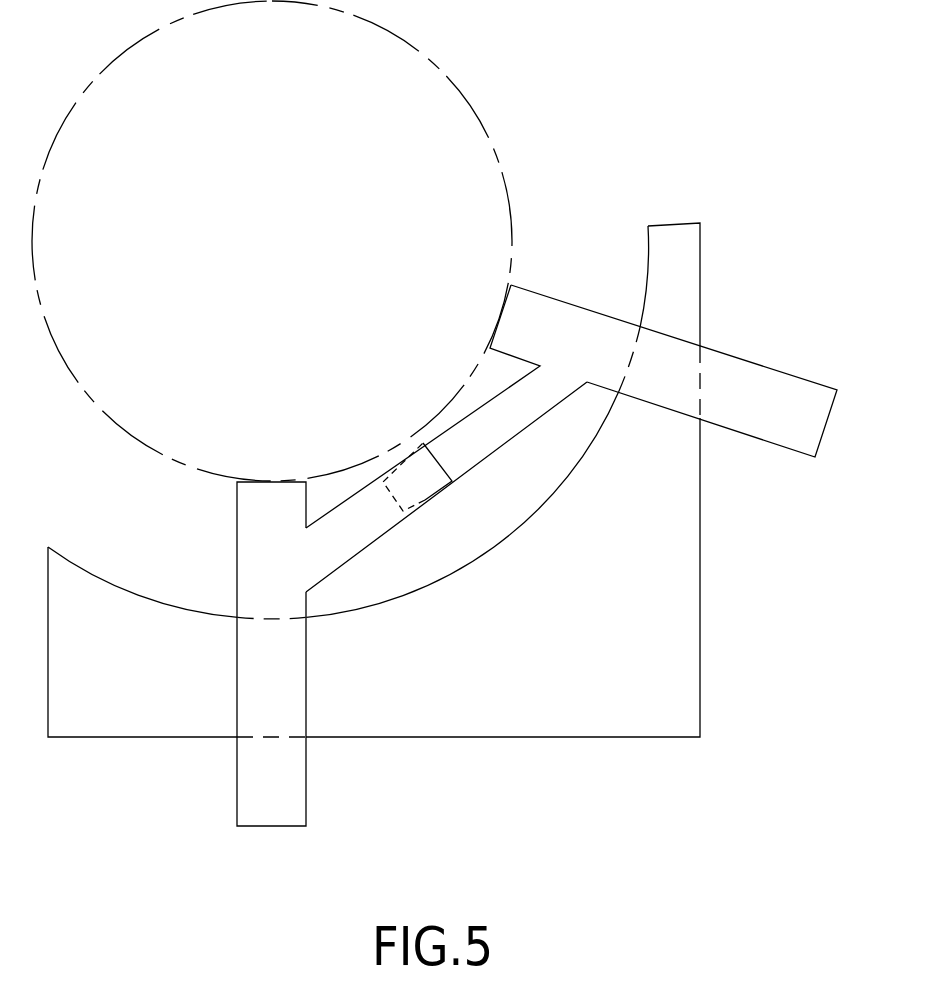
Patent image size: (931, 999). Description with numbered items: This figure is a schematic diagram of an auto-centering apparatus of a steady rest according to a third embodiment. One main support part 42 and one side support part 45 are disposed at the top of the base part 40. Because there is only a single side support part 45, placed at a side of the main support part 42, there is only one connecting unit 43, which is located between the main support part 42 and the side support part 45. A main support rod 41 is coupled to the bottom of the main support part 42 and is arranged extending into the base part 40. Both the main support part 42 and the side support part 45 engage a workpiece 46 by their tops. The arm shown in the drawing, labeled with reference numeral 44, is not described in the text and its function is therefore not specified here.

The base part 40 is at (668, 660).
The main support rod 41 is at (287, 687).
The main support part 42 is at (248, 553).
The connecting unit 43 is at (423, 482).
The swing arm 44 is at (767, 365).
The side support part 45 is at (540, 310).
The workpiece 46 is at (428, 138).